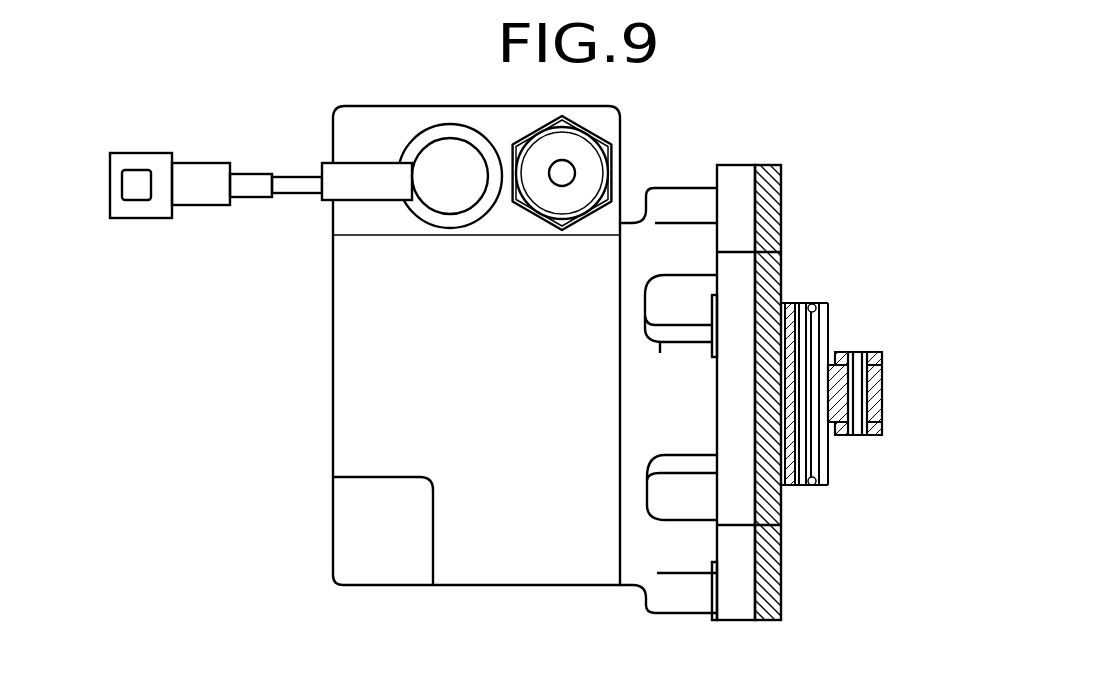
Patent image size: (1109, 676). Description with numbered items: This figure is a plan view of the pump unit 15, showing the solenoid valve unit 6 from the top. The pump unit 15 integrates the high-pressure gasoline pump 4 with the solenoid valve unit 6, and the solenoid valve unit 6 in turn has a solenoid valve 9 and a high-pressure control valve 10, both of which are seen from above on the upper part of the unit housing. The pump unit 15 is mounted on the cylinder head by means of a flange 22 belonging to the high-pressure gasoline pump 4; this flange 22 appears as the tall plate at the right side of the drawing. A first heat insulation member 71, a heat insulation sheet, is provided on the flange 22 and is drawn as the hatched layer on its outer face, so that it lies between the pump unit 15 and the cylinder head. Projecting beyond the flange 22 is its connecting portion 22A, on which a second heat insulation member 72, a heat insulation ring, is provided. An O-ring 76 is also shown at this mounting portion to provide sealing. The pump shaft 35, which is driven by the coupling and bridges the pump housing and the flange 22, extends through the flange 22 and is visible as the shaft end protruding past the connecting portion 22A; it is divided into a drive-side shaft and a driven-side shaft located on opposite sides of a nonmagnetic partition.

The high-pressure gasoline pump 4 is at (502, 360).
The solenoid valve unit 6 is at (527, 156).
The solenoid valve 9 is at (460, 157).
The high-pressure control valve 10 is at (606, 173).
The pump unit 15 is at (609, 374).
The flange 22 is at (732, 597).
The connecting portion 22A is at (822, 314).
The pump shaft 35 is at (882, 417).
The first heat insulation member 71 is at (775, 605).
The second heat insulation member 72 is at (788, 487).
The O-ring 76 is at (810, 486).